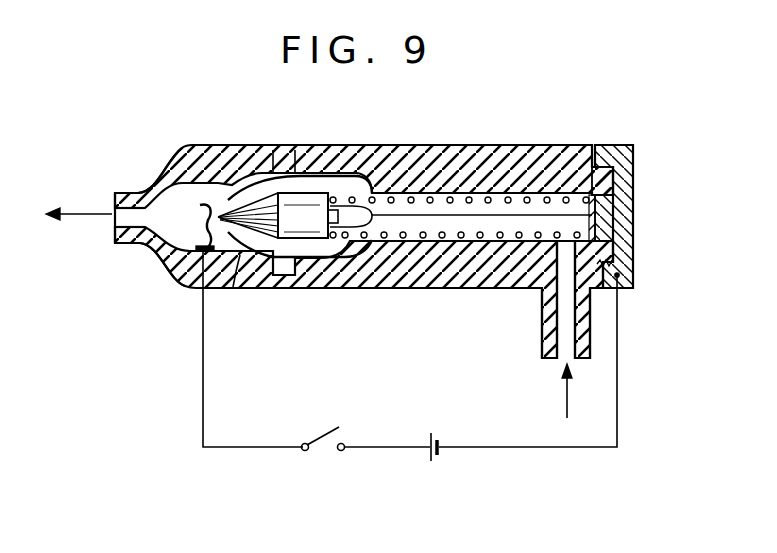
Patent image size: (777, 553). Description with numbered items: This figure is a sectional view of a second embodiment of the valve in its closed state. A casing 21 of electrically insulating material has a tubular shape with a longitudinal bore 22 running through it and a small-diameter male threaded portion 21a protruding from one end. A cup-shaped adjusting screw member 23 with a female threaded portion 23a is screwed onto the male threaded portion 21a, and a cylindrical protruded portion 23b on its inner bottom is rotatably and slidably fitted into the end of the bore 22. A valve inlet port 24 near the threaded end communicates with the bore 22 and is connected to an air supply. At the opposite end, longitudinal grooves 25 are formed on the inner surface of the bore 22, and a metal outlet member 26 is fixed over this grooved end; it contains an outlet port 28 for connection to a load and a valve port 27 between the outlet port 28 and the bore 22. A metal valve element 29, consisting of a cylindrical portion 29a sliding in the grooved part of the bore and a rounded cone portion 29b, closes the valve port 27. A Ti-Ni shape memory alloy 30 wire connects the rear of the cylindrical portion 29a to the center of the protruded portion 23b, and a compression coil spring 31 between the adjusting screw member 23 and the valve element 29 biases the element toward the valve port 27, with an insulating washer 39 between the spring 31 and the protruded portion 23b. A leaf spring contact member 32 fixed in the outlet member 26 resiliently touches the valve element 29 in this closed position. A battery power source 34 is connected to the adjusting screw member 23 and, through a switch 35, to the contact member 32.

The casing 21 is at (431, 160).
The male threaded portion 21a is at (599, 282).
The longitudinal bore 22 is at (456, 258).
The adjusting screw member 23 is at (622, 275).
The female threaded portion 23a is at (606, 180).
The protruded portion 23b is at (610, 216).
The valve inlet port 24 is at (566, 356).
The grooves 25 is at (340, 184).
The outlet member 26 is at (191, 153).
The valve port 27 is at (231, 264).
The outlet port 28 is at (118, 220).
The valve element 29 is at (300, 196).
The cylindrical portion 29a is at (308, 244).
The cone portion 29b is at (253, 190).
The shape memory alloy 30 is at (512, 214).
The compression coil spring 31 is at (404, 270).
The leaf spring contact member 32 is at (206, 207).
The power source 34 is at (434, 460).
The switch 35 is at (321, 440).
The washer 39 is at (596, 226).